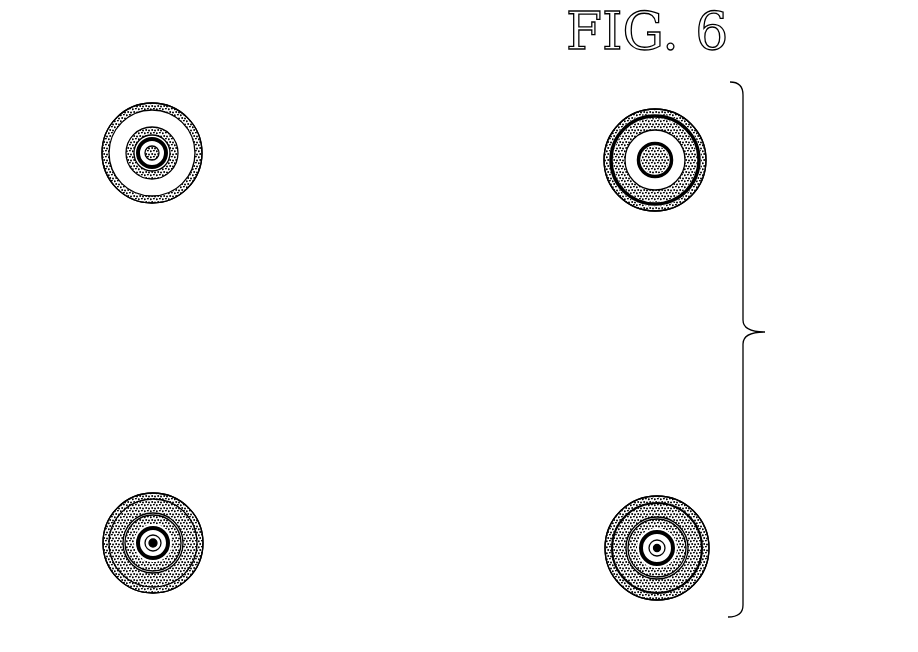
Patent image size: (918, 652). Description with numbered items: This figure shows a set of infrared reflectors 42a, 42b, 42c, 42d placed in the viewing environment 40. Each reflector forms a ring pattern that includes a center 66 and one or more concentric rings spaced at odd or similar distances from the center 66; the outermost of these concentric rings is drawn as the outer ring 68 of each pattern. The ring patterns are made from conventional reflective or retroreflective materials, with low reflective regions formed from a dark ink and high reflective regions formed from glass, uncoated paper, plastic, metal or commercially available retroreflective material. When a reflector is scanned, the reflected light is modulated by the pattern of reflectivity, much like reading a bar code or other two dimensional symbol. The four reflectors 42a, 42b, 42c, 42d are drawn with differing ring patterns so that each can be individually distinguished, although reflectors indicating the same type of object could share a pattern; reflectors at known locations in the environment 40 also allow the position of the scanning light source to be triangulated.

The environment 40 is at (444, 113).
The infrared reflector 42a is at (197, 128).
The infrared reflector 42b is at (665, 110).
The infrared reflector 42c is at (193, 507).
The infrared reflector 42d is at (667, 497).
The center 66 is at (152, 130).
The outer insulating jacket 68 is at (202, 173).